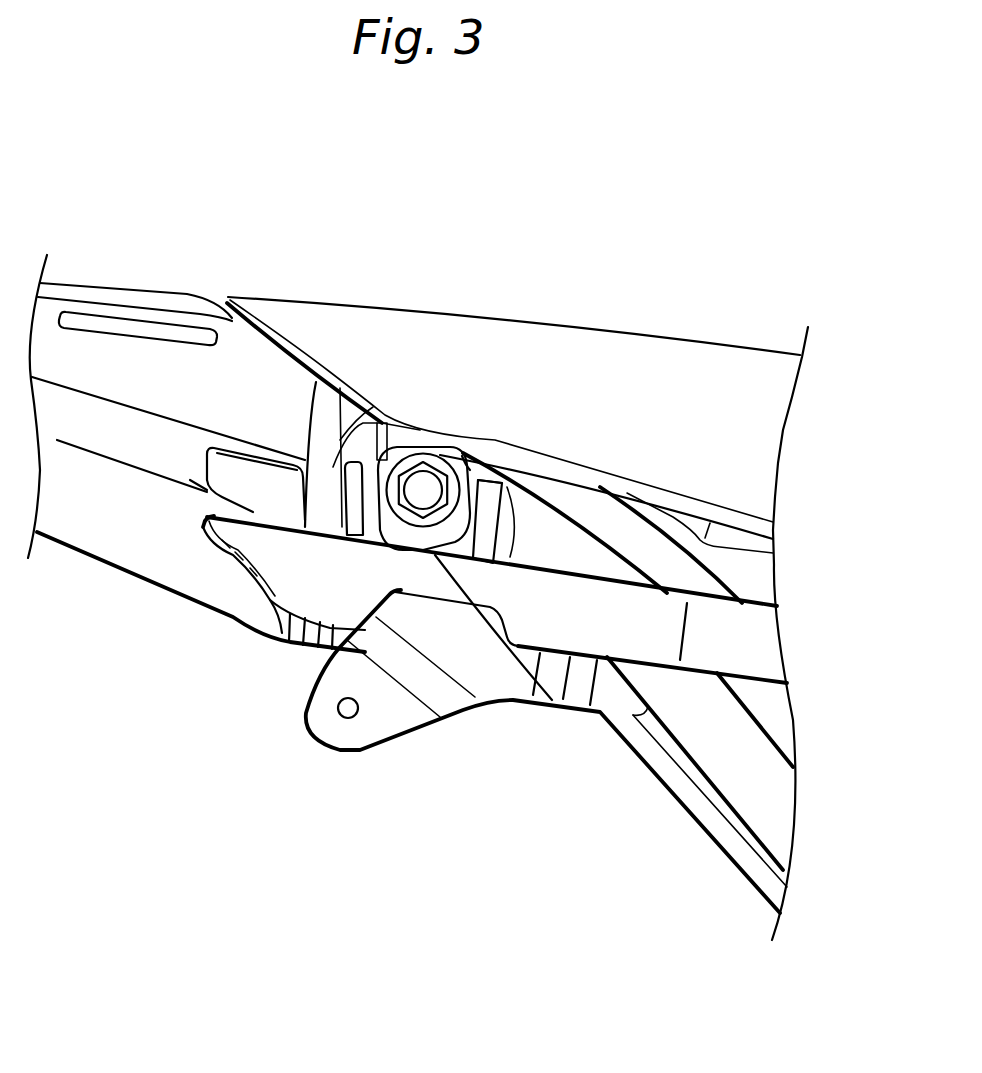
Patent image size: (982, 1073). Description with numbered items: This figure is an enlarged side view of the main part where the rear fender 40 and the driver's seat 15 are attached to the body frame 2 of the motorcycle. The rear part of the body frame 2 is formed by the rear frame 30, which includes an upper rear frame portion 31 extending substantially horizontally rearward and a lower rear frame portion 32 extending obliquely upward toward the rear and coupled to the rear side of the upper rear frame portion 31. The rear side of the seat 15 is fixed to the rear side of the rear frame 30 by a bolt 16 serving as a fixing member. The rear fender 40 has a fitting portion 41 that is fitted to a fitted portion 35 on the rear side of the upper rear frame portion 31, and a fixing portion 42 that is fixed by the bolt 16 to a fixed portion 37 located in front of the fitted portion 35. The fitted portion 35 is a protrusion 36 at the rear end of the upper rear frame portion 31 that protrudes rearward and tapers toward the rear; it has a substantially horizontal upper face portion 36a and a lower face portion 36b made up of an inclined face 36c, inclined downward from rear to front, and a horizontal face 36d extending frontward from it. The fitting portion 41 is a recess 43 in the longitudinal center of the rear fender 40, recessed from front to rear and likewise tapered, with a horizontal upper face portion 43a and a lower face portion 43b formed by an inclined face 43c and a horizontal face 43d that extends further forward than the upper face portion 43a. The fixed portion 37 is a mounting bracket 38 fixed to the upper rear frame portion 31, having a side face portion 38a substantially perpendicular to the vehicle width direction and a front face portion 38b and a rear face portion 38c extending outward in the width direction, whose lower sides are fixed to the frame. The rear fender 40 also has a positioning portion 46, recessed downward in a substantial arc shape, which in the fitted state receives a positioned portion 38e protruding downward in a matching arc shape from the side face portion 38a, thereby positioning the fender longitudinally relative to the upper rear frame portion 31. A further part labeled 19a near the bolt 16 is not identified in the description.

The body frame 2 is at (767, 597).
The driver's seat 15 is at (745, 349).
The bolt 16 is at (432, 468).
The bolt 19a is at (462, 453).
The rear frame 30 is at (773, 663).
The upper rear frame portion 31 is at (773, 627).
The lower rear frame portion 32 is at (760, 755).
The fitted portion 35 is at (272, 565).
The protrusion 36 is at (262, 562).
The upper face portion 36a is at (252, 515).
The lower face portion 36b is at (315, 592).
The inclined face 36c is at (238, 560).
The horizontal face 36d is at (340, 640).
The fixed portion 37 is at (442, 450).
The mounting bracket 38 is at (483, 480).
The side face portion 38a is at (482, 477).
The front face portion 38b is at (463, 503).
The rear face portion 38c is at (357, 455).
The positioned portion 38e is at (418, 536).
The rear fender 40 is at (97, 276).
The fitting portion 41 is at (215, 533).
The fixing portion 42 is at (380, 420).
The recess 43 is at (207, 524).
The upper face portion 43a is at (240, 513).
The lower face portion 43b is at (347, 620).
The inclined face 43c is at (228, 547).
The horizontal face 43d is at (317, 623).
The positioning portion 46 is at (552, 700).